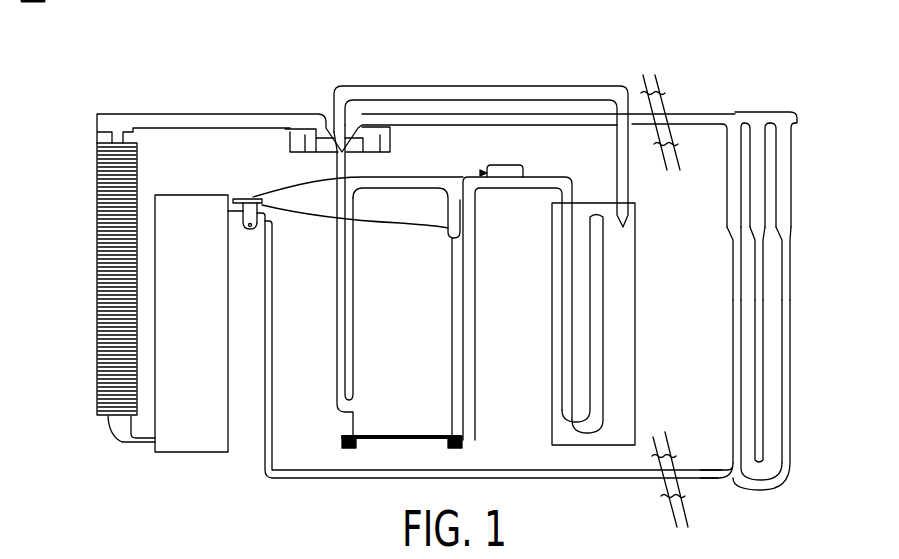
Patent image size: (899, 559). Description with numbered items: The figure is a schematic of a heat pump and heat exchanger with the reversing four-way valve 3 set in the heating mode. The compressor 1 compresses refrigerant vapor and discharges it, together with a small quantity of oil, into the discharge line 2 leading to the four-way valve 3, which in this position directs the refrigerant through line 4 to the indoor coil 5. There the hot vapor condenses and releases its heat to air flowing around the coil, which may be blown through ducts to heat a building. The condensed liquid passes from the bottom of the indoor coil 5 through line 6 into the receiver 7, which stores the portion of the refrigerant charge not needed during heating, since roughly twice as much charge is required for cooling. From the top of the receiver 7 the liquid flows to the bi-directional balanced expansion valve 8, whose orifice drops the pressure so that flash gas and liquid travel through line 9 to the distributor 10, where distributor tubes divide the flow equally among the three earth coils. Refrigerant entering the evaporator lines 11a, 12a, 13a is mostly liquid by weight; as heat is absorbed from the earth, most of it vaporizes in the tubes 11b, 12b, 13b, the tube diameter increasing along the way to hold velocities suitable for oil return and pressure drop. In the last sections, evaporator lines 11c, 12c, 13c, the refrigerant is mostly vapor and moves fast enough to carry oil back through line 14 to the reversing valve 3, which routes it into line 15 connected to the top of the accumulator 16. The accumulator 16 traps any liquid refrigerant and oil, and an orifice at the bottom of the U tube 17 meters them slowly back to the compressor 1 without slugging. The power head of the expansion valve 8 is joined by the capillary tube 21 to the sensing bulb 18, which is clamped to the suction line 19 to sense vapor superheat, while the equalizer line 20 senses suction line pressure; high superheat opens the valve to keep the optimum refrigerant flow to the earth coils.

The compressor 1 is at (452, 310).
The discharge line 2 is at (337, 373).
The reversing four-way valve 3 is at (289, 137).
The line 4 is at (240, 200).
The indoor coil 5 is at (97, 277).
The line 6 is at (140, 445).
The receiver 7 is at (153, 303).
The bi-directional balanced expansion valve 8 is at (245, 200).
The line 9 is at (273, 298).
The distributor 10 is at (720, 477).
The evaporator line 11a is at (735, 390).
The tube 11b is at (735, 268).
The evaporator line 11c is at (735, 175).
The evaporator line 12a is at (763, 398).
The tube 12b is at (765, 277).
The evaporator line 12c is at (765, 182).
The evaporator line 13a is at (788, 413).
The tube 13b is at (790, 287).
The evaporator line 13c is at (792, 190).
The line 14 is at (745, 117).
The line 15 is at (370, 89).
The accumulator 16 is at (552, 365).
The U tube 17 is at (573, 417).
The sensing bulb 18 is at (520, 167).
The suction line 19 is at (510, 190).
The equalizer line 20 is at (487, 190).
The capillary tube 21 is at (398, 174).